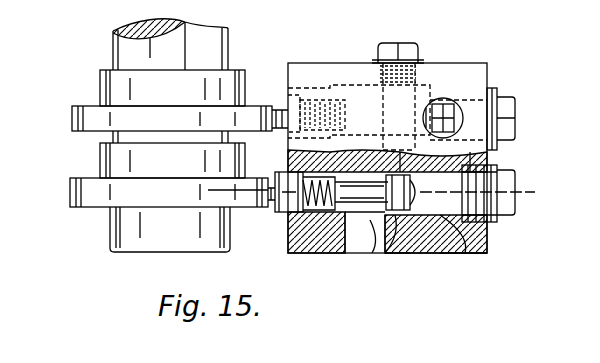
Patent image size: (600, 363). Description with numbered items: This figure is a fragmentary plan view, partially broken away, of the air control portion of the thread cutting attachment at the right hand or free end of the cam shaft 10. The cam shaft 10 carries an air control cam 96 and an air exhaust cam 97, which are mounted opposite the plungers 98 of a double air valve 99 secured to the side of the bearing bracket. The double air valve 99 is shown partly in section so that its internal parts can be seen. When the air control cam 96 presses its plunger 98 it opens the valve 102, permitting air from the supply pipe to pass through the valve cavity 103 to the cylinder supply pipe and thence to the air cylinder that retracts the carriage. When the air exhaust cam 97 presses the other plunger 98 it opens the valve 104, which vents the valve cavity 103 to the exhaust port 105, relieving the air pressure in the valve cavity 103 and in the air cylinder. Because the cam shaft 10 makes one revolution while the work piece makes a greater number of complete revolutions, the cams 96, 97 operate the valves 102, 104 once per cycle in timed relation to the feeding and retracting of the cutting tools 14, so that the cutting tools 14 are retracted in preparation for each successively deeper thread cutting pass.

The cam shaft 10 is at (215, 50).
The cutting tools 14 is at (210, 200).
The air control cam 96 is at (74, 119).
The air exhaust cam 97 is at (73, 193).
The plungers 98 is at (278, 126).
The double air valve 99 is at (478, 76).
The valve 102 is at (443, 98).
The valve cavity 103 is at (462, 242).
The valve 104 is at (409, 242).
The exhaust port 105 is at (377, 246).